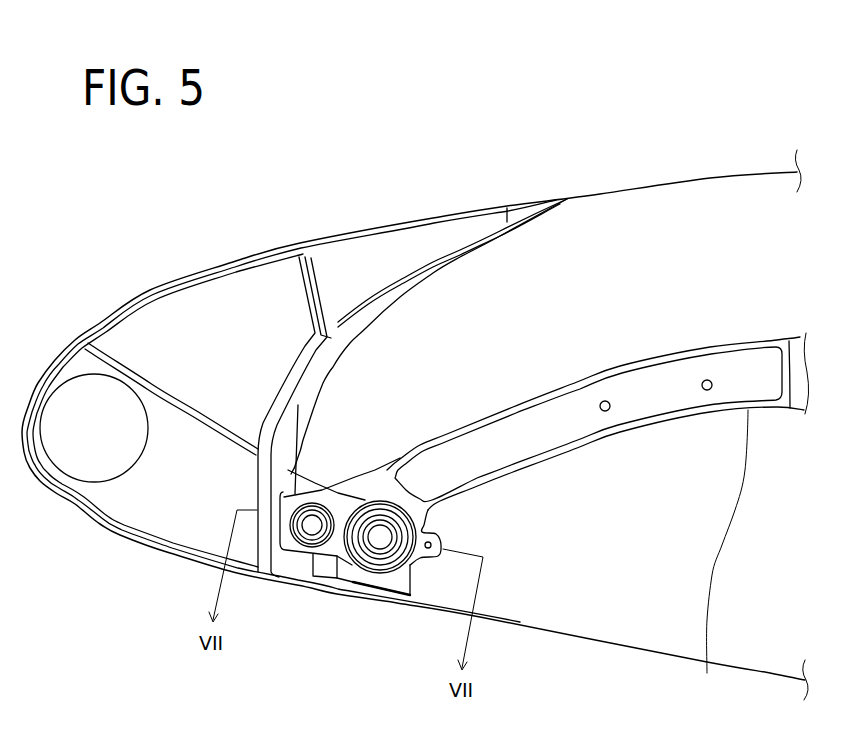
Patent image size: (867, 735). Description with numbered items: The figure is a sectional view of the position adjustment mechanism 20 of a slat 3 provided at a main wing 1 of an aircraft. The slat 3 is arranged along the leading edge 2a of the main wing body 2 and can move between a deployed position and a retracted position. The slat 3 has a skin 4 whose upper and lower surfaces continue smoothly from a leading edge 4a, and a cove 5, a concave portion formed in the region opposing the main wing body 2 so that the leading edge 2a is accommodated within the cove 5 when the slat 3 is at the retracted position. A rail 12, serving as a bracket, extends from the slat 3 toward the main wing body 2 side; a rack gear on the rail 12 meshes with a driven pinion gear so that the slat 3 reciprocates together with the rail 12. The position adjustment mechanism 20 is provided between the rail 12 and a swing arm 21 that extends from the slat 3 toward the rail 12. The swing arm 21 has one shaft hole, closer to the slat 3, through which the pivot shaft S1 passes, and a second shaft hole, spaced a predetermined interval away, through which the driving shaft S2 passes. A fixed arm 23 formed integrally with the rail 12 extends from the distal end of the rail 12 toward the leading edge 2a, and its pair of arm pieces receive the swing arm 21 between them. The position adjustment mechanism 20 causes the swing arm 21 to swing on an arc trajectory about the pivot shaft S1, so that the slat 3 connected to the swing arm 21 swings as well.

The main wing 1 is at (628, 96).
The main wing body 2 is at (711, 176).
The leading edge 2a is at (299, 402).
The slat 3 is at (207, 266).
The skin 4 is at (108, 315).
The leading edge 4a is at (8, 428).
The cove 5 is at (312, 378).
The rail 12 is at (721, 558).
The position adjustment mechanism 20 is at (420, 424).
The swing arm 21 is at (324, 488).
The fixed arm 23 is at (345, 564).
The pivot shaft S1 is at (300, 558).
The driving shaft S2 is at (387, 574).